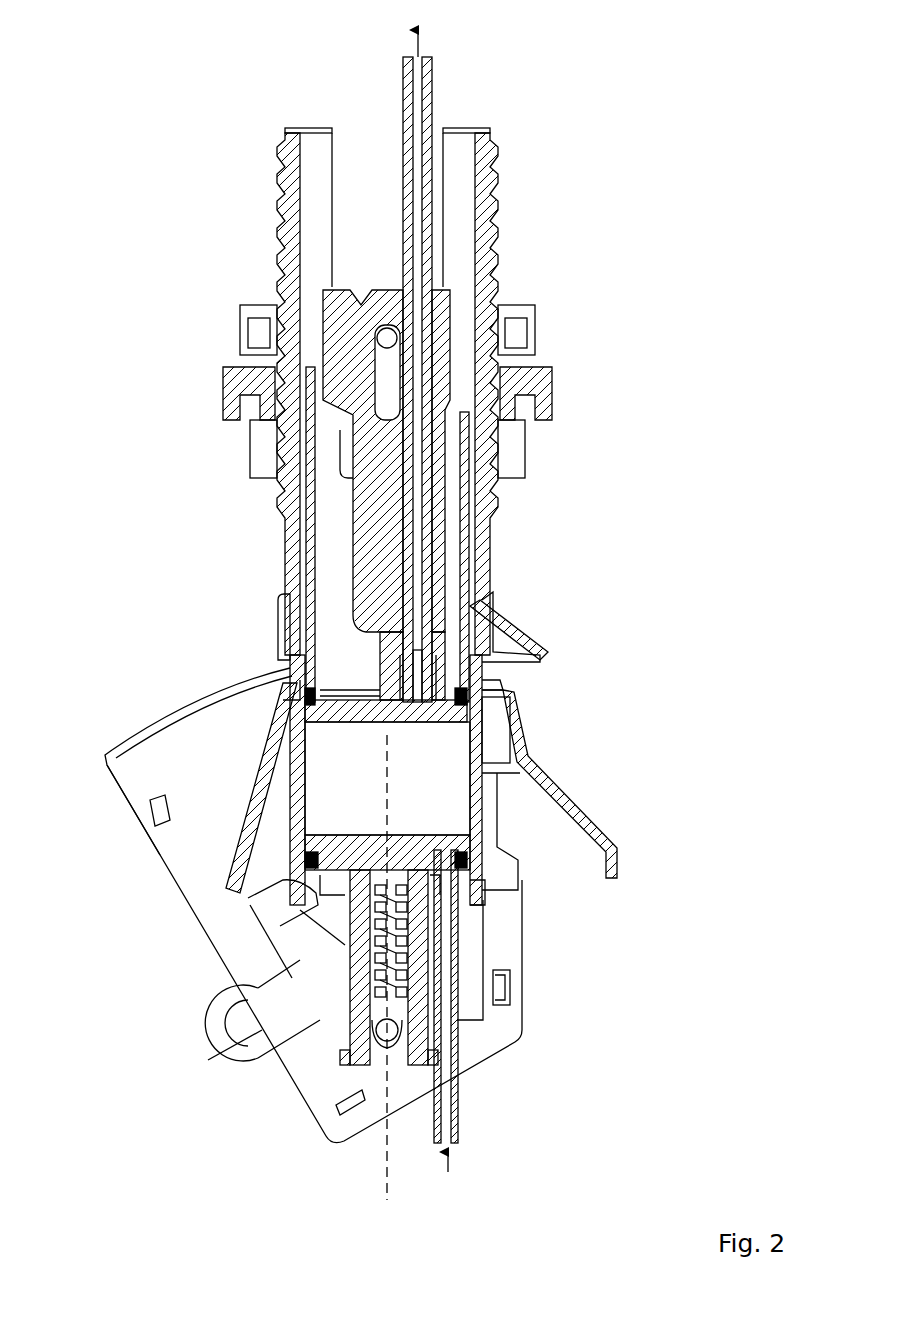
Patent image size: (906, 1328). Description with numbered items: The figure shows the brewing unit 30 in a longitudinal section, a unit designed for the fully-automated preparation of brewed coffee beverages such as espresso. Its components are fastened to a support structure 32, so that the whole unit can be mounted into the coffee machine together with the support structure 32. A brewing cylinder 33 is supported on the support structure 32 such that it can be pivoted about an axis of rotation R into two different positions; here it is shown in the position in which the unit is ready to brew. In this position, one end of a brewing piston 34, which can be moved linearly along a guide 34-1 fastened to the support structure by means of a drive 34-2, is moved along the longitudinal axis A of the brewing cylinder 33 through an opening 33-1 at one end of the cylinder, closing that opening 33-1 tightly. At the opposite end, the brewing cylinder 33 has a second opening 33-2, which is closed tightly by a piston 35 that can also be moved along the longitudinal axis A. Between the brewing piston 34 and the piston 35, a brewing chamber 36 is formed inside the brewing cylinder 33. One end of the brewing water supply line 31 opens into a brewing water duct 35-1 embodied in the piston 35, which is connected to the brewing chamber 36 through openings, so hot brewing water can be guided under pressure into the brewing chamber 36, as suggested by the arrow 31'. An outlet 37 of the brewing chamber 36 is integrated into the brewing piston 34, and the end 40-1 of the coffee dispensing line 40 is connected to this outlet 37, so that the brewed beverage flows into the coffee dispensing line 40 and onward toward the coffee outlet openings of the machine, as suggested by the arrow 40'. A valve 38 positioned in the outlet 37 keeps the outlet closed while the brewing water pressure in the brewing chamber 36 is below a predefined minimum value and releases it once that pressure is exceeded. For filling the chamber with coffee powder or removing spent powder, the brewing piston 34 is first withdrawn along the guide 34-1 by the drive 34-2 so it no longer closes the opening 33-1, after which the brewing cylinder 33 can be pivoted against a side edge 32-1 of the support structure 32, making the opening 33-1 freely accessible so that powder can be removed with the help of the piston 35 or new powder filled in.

The brewing unit 30 is at (678, 95).
The brewing water supply line 31 is at (498, 1002).
The arrow 31' is at (508, 1175).
The support structure 32 is at (215, 915).
The side edge 32-1 is at (156, 848).
The brewing cylinder 33 is at (483, 800).
The opening 33-1 is at (283, 665).
The second opening 33-2 is at (290, 893).
The brewing piston 34 is at (307, 538).
The guide 34-1 is at (490, 545).
The drive 34-2 is at (555, 392).
The piston 35 is at (307, 887).
The brewing water duct 35-1 is at (483, 893).
The brewing chamber 36 is at (432, 787).
The outlet 37 is at (500, 700).
The valve 38 is at (455, 682).
The coffee dispensing line 40 is at (450, 375).
The arrow 40' is at (461, 31).
The end of the coffee dispensing line 40-1 is at (445, 665).
The axis of rotation R is at (380, 1014).
The longitudinal axis A is at (383, 986).